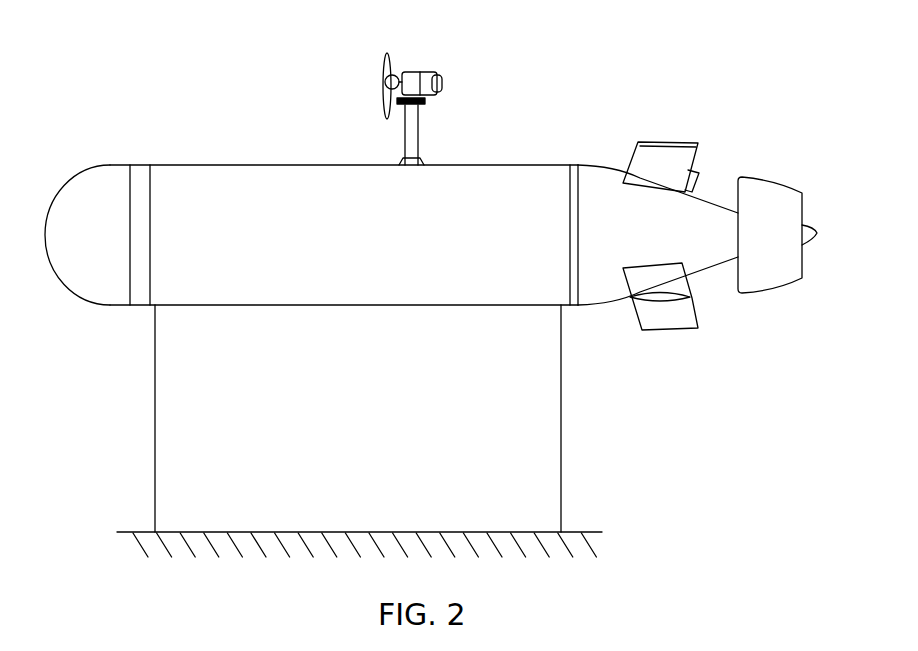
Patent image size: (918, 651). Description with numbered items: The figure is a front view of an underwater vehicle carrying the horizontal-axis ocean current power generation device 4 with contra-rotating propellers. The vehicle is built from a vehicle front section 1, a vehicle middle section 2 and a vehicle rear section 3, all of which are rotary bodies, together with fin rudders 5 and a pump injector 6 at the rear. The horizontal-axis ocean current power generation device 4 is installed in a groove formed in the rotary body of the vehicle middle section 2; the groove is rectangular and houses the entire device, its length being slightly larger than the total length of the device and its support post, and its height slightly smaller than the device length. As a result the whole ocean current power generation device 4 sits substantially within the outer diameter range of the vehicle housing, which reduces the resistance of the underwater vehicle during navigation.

The vehicle front section 1 is at (103, 210).
The vehicle middle section 2 is at (257, 207).
The vehicle rear section 3 is at (705, 218).
The horizontal-axis ocean current power generation device 4 is at (423, 88).
The fin rudders 5 is at (658, 180).
The pump injector 6 is at (770, 217).